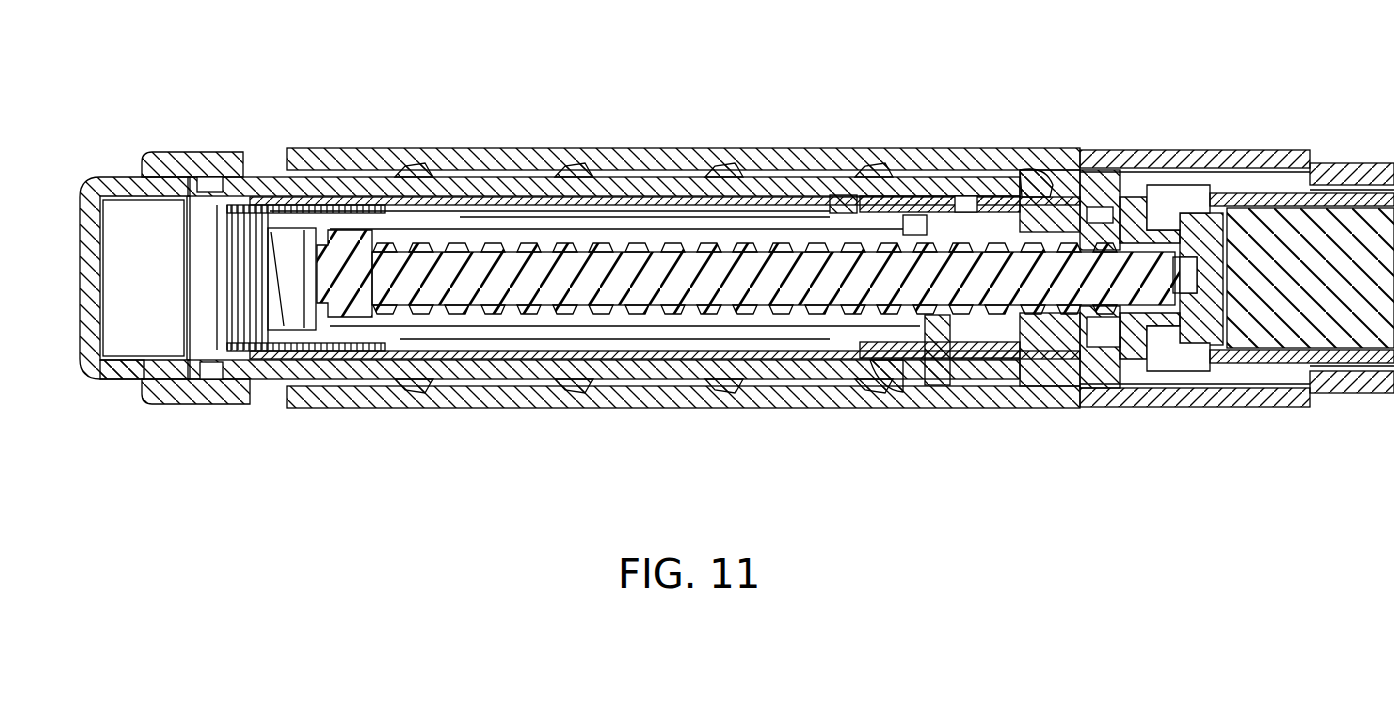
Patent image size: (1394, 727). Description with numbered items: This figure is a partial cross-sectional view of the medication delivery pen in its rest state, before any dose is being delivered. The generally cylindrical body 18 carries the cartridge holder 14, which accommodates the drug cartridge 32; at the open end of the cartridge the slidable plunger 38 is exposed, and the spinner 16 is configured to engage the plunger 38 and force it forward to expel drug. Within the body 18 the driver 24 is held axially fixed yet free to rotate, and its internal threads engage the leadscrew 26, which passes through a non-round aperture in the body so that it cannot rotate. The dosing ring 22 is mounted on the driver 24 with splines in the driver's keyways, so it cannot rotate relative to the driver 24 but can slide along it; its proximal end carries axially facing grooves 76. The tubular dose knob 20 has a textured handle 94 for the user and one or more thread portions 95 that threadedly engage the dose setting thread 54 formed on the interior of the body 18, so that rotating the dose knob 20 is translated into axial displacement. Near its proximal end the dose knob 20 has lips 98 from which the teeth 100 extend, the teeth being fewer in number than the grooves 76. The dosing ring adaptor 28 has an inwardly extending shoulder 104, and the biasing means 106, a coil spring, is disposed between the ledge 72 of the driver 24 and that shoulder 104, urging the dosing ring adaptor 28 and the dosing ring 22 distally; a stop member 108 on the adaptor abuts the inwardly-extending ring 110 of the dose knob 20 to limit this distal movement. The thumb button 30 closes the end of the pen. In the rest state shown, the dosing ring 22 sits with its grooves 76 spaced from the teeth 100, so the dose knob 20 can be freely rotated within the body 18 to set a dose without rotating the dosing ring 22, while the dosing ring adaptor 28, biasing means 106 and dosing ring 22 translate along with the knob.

The cartridge holder 14 is at (1280, 148).
The spinner 16 is at (1193, 407).
The body 18 is at (724, 418).
The dose knob 20 is at (244, 418).
The dosing ring 22 is at (935, 383).
The driver 24 is at (622, 340).
The leadscrew 26 is at (488, 312).
The dosing ring adaptor 28 is at (513, 148).
The thumb button 30 is at (85, 380).
The drug cartridge 32 is at (1338, 407).
The plunger 38 is at (1272, 408).
The dose setting thread 54 is at (867, 148).
The ledge 72 is at (403, 350).
The grooves 76 is at (958, 350).
The textured handle 94 is at (208, 150).
The thread portions 95 is at (885, 392).
The lips 98 is at (998, 195).
The teeth 100 is at (960, 175).
The shoulder 104 is at (217, 340).
The biasing means 106 is at (272, 382).
The stop member 108 is at (169, 385).
The inwardly-extending ring 110 is at (133, 382).